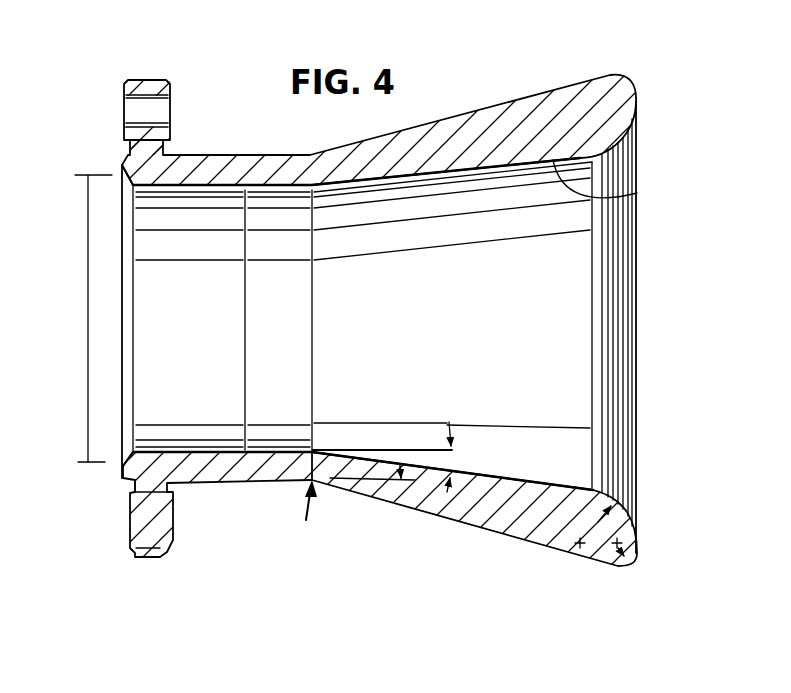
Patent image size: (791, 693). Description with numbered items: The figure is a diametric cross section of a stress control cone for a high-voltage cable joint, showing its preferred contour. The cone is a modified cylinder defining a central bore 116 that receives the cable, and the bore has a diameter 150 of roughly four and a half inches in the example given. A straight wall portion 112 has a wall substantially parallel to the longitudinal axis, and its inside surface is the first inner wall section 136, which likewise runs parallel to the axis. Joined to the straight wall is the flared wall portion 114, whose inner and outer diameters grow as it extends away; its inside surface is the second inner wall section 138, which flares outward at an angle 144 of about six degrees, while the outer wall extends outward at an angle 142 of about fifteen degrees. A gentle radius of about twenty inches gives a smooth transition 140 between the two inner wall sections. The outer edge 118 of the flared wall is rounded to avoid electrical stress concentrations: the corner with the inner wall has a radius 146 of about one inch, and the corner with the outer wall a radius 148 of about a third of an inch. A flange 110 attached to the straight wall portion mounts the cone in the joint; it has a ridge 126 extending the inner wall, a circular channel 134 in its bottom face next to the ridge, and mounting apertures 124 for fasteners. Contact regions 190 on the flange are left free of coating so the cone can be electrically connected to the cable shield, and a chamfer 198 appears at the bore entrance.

The flange 110 is at (158, 557).
The straight wall portion 112 is at (268, 166).
The flared wall portion 114 is at (523, 110).
The central bore 116 is at (436, 356).
The outer edge 118 is at (640, 553).
The mounting aperture 124 is at (124, 120).
The ridge 126 is at (123, 482).
The circular channel 134 is at (131, 492).
The first inner wall section 136 is at (226, 200).
The second inner wall section 138 is at (605, 197).
The transition 140 is at (306, 520).
The angle 142 is at (392, 510).
The angle 144 is at (448, 455).
The radius 146 is at (580, 547).
The radius 148 is at (617, 548).
The diameter 150 is at (70, 318).
The contact region 190 is at (170, 89).
The chamfer 198 is at (120, 452).